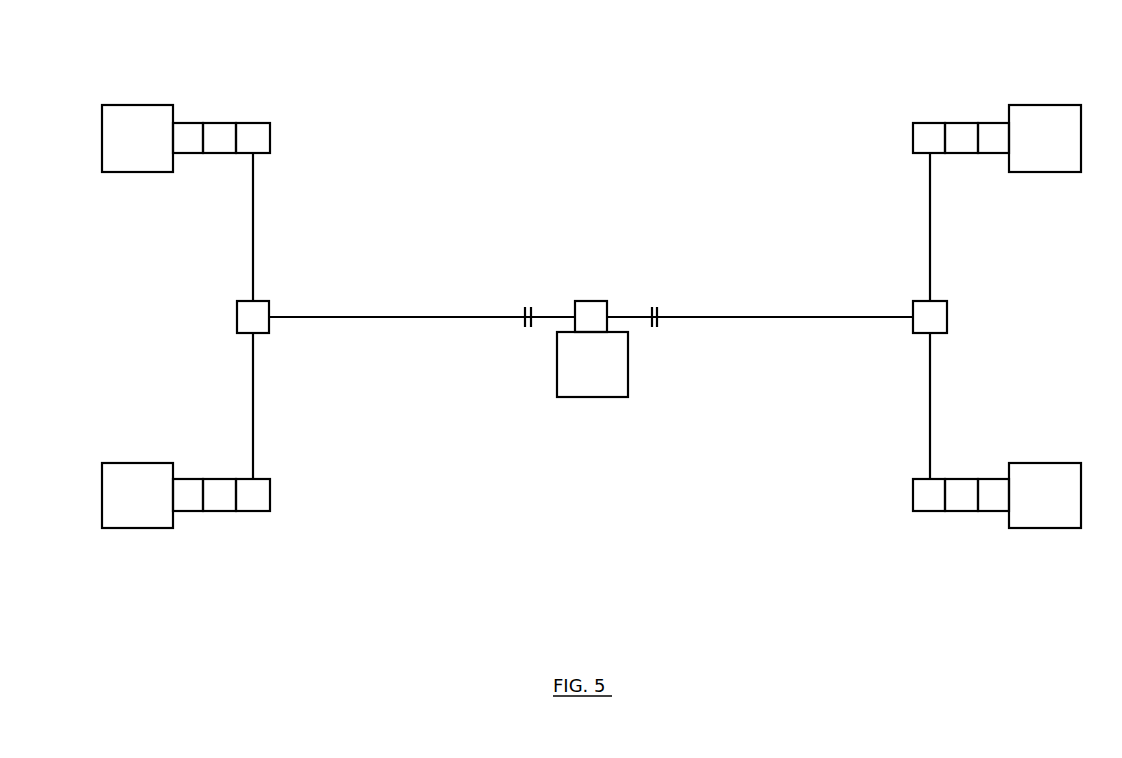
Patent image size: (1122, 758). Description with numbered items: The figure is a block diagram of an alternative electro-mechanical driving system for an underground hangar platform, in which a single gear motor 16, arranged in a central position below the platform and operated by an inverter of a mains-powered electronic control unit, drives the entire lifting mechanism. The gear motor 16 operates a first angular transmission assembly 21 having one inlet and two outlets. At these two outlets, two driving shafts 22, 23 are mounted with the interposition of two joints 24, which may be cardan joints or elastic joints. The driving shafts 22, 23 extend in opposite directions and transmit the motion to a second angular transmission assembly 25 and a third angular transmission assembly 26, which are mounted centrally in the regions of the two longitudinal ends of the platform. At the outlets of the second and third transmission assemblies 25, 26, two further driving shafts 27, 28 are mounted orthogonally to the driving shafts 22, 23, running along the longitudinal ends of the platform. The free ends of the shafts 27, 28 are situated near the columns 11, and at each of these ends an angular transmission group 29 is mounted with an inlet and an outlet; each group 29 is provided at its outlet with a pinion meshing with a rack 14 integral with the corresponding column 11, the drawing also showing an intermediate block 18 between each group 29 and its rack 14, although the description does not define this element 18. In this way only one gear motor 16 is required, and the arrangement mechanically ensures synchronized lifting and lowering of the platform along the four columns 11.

The columns 11 is at (133, 127).
The racks 14 is at (187, 135).
The transmitter 18 is at (222, 135).
The angular transmission groups 29 is at (262, 135).
The driving shaft 27 is at (250, 247).
The driving shaft 28 is at (933, 242).
The second angular transmission assembly 25 is at (248, 320).
The third angular transmission assembly 26 is at (937, 318).
The driving shaft 22 is at (414, 316).
The driving shaft 23 is at (752, 316).
The joints 24 is at (524, 323).
The first angular transmission assembly 21 is at (588, 315).
The gear motor 16 is at (578, 383).